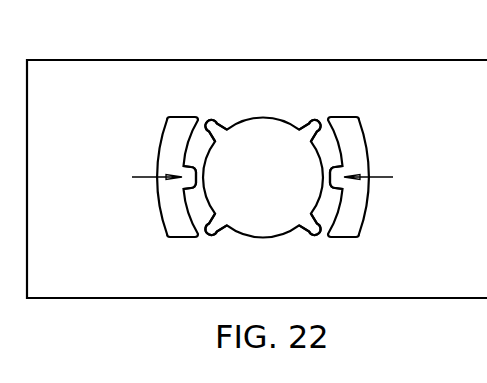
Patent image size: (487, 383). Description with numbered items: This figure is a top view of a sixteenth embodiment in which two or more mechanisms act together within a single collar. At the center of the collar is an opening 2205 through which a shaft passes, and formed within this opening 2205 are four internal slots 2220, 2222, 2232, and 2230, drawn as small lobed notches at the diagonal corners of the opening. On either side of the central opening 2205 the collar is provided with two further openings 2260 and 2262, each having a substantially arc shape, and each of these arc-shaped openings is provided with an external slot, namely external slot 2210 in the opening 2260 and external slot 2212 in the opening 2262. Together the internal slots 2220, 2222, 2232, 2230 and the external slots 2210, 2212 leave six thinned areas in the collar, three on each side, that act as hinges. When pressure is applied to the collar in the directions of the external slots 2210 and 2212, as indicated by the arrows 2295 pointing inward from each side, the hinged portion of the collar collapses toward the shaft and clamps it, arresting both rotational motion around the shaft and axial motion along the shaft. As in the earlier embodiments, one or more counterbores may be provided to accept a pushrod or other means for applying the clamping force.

The opening 2205 is at (265, 132).
The internal slot 2220 is at (208, 118).
The internal slot 2222 is at (317, 120).
The internal slot 2230 is at (209, 234).
The internal slot 2232 is at (320, 234).
The opening 2262 is at (182, 237).
The opening 2260 is at (350, 238).
The external slot 2212 is at (186, 172).
The external slot 2210 is at (342, 171).
The arrows 2295 is at (147, 182).